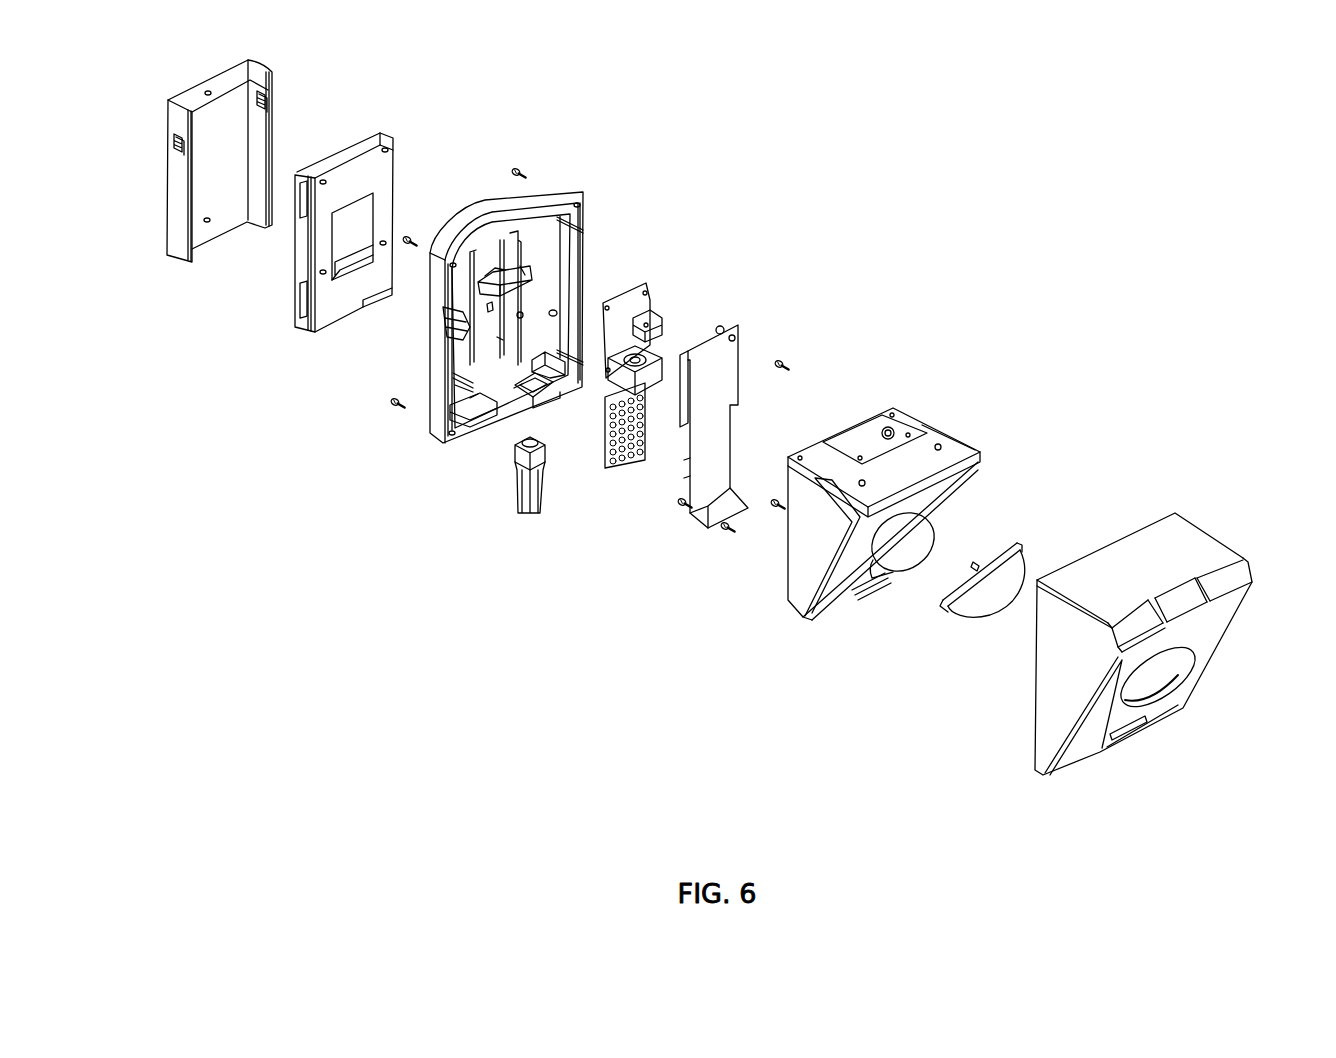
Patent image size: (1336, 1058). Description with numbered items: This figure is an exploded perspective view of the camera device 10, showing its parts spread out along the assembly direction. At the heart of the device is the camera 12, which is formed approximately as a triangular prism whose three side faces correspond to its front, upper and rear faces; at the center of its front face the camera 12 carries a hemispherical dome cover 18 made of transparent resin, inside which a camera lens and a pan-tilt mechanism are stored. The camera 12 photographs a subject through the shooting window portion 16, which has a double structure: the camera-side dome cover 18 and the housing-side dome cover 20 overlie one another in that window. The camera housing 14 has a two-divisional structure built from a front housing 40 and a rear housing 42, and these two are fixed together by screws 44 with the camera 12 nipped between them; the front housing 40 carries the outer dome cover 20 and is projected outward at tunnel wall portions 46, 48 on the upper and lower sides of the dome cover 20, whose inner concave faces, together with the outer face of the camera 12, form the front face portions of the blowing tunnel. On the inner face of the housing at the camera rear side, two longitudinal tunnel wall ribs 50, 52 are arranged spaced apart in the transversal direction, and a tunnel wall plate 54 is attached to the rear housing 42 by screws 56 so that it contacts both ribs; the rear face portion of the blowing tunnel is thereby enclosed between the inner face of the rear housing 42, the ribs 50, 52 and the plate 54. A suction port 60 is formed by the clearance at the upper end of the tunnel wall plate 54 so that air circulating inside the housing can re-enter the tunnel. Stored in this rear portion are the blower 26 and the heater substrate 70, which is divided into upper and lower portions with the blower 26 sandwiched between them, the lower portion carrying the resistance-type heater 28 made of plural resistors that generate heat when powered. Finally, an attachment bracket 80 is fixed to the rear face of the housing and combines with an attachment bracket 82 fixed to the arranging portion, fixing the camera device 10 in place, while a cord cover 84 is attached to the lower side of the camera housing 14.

The camera device 10 is at (888, 335).
The camera 12 is at (923, 407).
The camera housing 14 is at (1095, 505).
The shooting window portion 16 is at (990, 508).
The dome cover 18 is at (902, 548).
The dome cover 20 is at (977, 605).
The blower 26 is at (653, 360).
The heater 28 is at (613, 470).
The front housing 40 is at (1155, 535).
The rear housing 42 is at (547, 198).
The screws 44 is at (523, 168).
The tunnel wall portion 46 is at (1183, 605).
The tunnel wall portion 48 is at (1145, 708).
The tunnel wall rib 50 is at (520, 393).
The tunnel wall rib 52 is at (483, 407).
The tunnel wall plate 54 is at (727, 367).
The screws 56 is at (785, 358).
The suction port 60 is at (703, 340).
The heater substrate 70 is at (597, 447).
The attachment bracket 80 is at (330, 313).
The attachment bracket 82 is at (175, 253).
The cord cover 84 is at (510, 495).